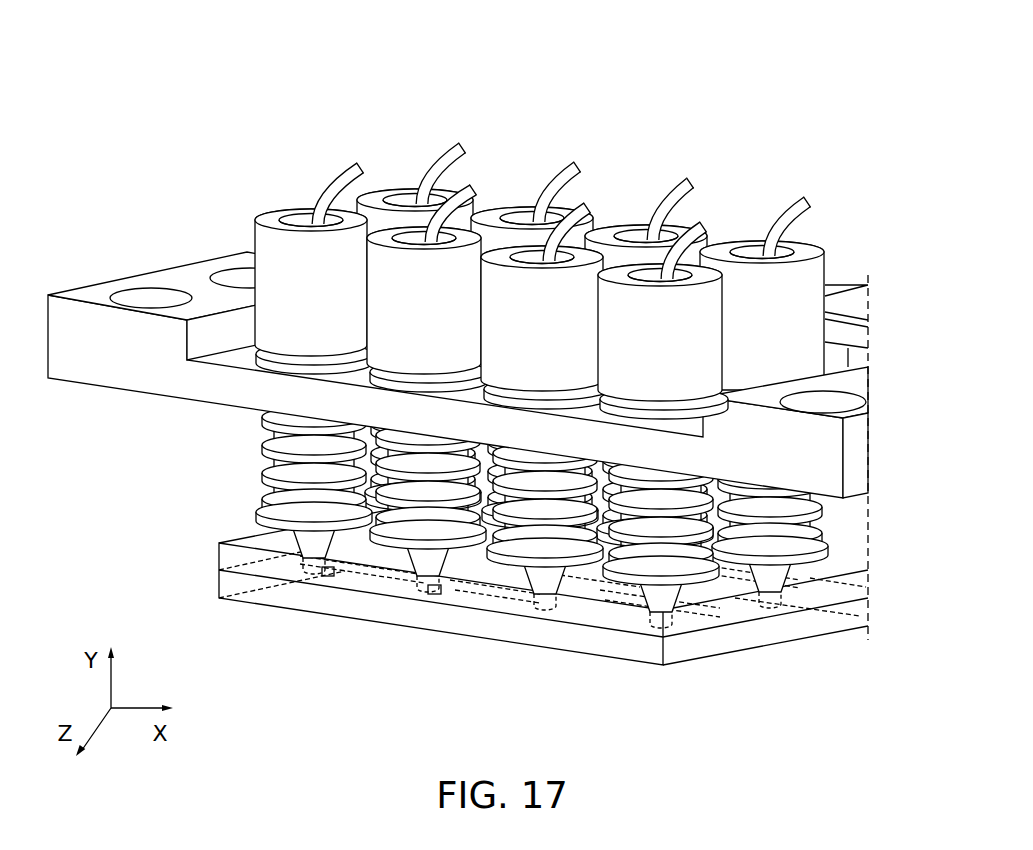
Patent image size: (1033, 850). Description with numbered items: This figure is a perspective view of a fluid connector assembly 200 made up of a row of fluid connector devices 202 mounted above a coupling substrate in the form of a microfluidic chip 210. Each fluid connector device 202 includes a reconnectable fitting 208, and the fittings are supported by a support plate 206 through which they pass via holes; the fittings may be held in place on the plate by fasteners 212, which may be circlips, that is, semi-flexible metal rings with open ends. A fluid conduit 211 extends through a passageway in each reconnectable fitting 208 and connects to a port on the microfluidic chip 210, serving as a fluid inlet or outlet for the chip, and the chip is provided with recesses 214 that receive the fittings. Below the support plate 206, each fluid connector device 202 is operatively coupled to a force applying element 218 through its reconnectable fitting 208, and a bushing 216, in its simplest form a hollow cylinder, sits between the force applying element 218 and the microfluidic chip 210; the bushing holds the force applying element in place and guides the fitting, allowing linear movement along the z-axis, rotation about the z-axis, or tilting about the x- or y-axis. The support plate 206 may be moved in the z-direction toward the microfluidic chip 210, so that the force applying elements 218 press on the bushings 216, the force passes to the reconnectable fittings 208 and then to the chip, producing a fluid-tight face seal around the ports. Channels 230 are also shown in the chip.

The fluid connector assembly 200 is at (471, 353).
The fluid connector device 202 is at (262, 280).
The support plate 206 is at (84, 375).
The reconnectable fitting 208 is at (258, 266).
The microfluidic chip 210 is at (505, 585).
The fluid conduit 211 is at (355, 172).
The fastener 212 is at (273, 368).
The recess 214 is at (616, 632).
The bushing 216 is at (277, 513).
The force applying element 218 is at (281, 462).
The channel 230 is at (433, 593).